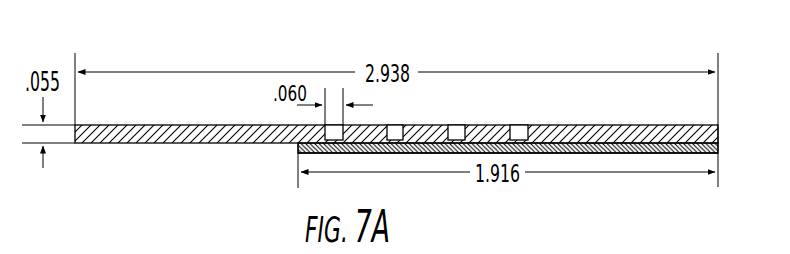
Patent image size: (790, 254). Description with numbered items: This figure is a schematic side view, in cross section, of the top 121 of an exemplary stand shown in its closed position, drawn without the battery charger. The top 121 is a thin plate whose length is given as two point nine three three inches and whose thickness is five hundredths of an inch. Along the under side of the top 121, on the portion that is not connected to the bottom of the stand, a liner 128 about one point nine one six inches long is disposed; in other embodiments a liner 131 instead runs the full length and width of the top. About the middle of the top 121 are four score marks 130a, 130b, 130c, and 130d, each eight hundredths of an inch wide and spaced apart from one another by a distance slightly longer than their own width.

The top 121 is at (720, 143).
The liner 128 is at (634, 154).
The liner 131 is at (425, 153).
The score mark 130a is at (332, 125).
The score mark 130b is at (400, 125).
The score mark 130c is at (460, 125).
The score mark 130d is at (523, 125).